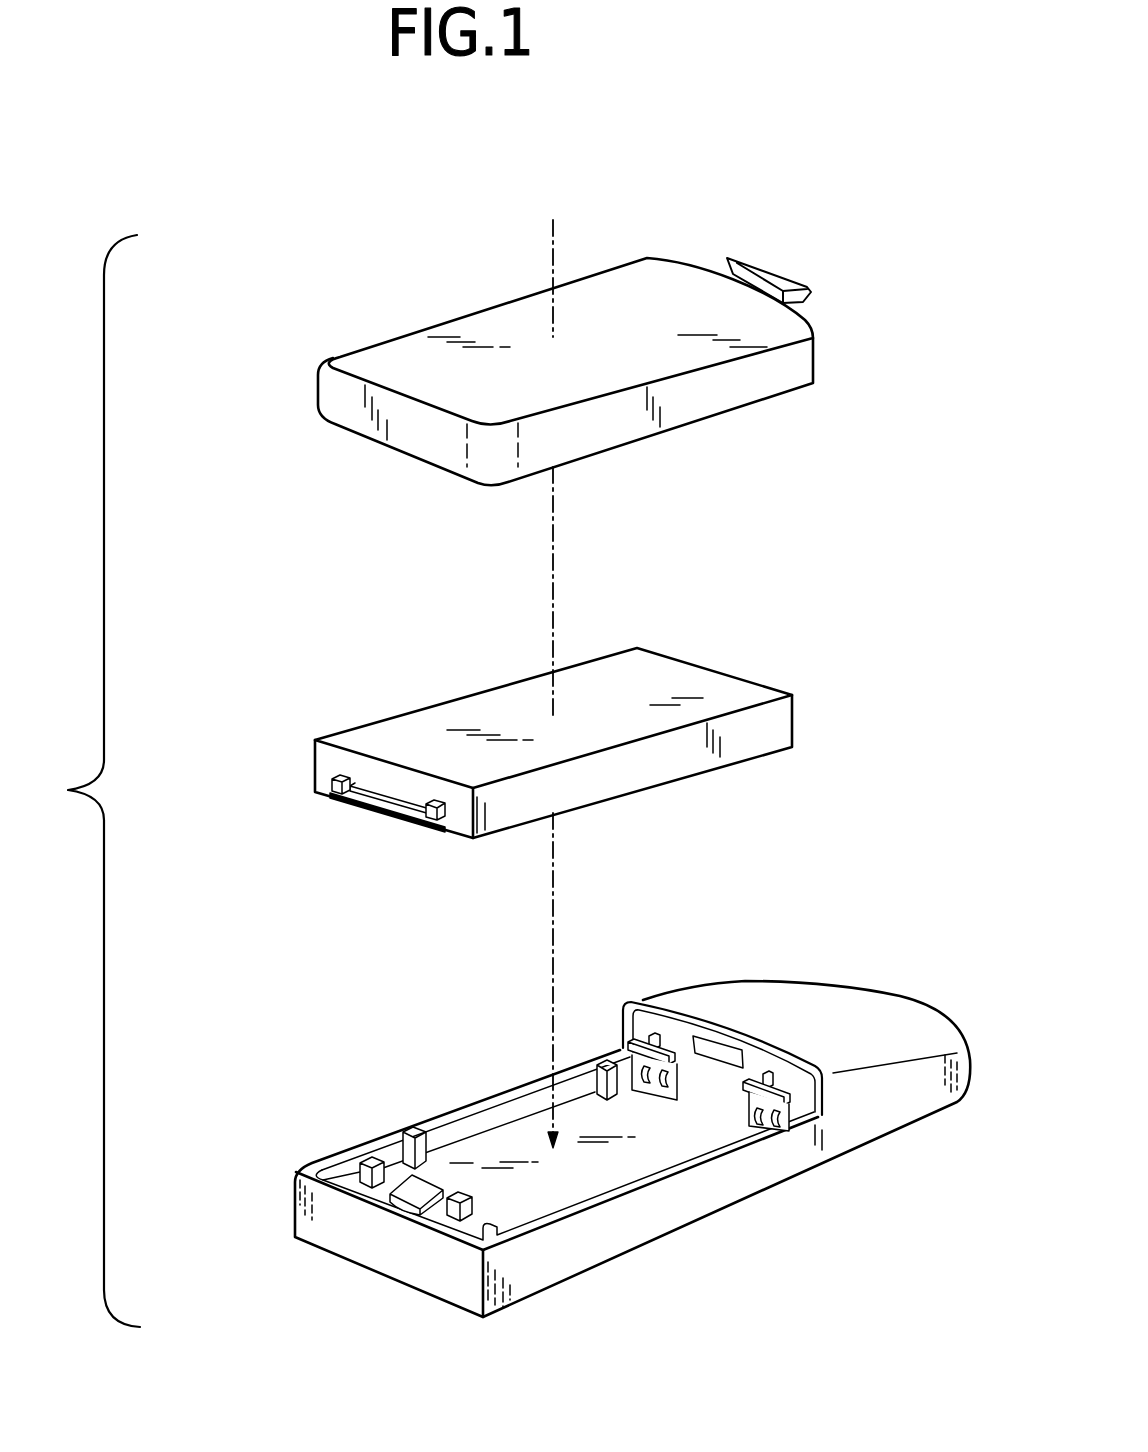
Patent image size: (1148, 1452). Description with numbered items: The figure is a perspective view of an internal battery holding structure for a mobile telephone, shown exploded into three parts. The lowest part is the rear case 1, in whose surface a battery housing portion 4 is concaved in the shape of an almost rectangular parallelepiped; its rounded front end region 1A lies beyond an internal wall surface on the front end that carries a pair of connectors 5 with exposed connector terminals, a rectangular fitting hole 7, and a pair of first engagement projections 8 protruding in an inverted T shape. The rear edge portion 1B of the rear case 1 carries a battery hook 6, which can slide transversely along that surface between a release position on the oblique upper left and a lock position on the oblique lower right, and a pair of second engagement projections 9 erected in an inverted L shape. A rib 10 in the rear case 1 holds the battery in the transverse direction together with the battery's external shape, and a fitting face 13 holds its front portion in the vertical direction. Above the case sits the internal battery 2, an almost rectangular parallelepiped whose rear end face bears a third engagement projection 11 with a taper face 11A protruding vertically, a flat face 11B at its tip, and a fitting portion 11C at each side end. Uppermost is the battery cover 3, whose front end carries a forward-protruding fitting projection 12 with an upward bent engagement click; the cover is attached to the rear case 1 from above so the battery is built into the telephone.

The rear case 1 is at (757, 1178).
The rounded end portion of case 1A is at (838, 1010).
The rear edge portion 1B is at (362, 1193).
The internal battery 2 is at (713, 683).
The battery cover 3 is at (692, 410).
The battery housing portion 4 is at (547, 1190).
The connectors 5 is at (612, 1047).
The battery hook 6 is at (410, 1188).
The rectangular fitting hole 7 is at (715, 1045).
The first engagement projections 8 is at (632, 1003).
The second engagement projections 9 is at (368, 1157).
The rib 10 is at (410, 1128).
The third engagement projection 11 is at (354, 785).
The taper face 11A is at (363, 803).
The flat face 11B is at (397, 813).
The fitting portion 11C is at (323, 795).
The fitting projection 12 is at (777, 270).
The fitting face 13 is at (713, 1093).